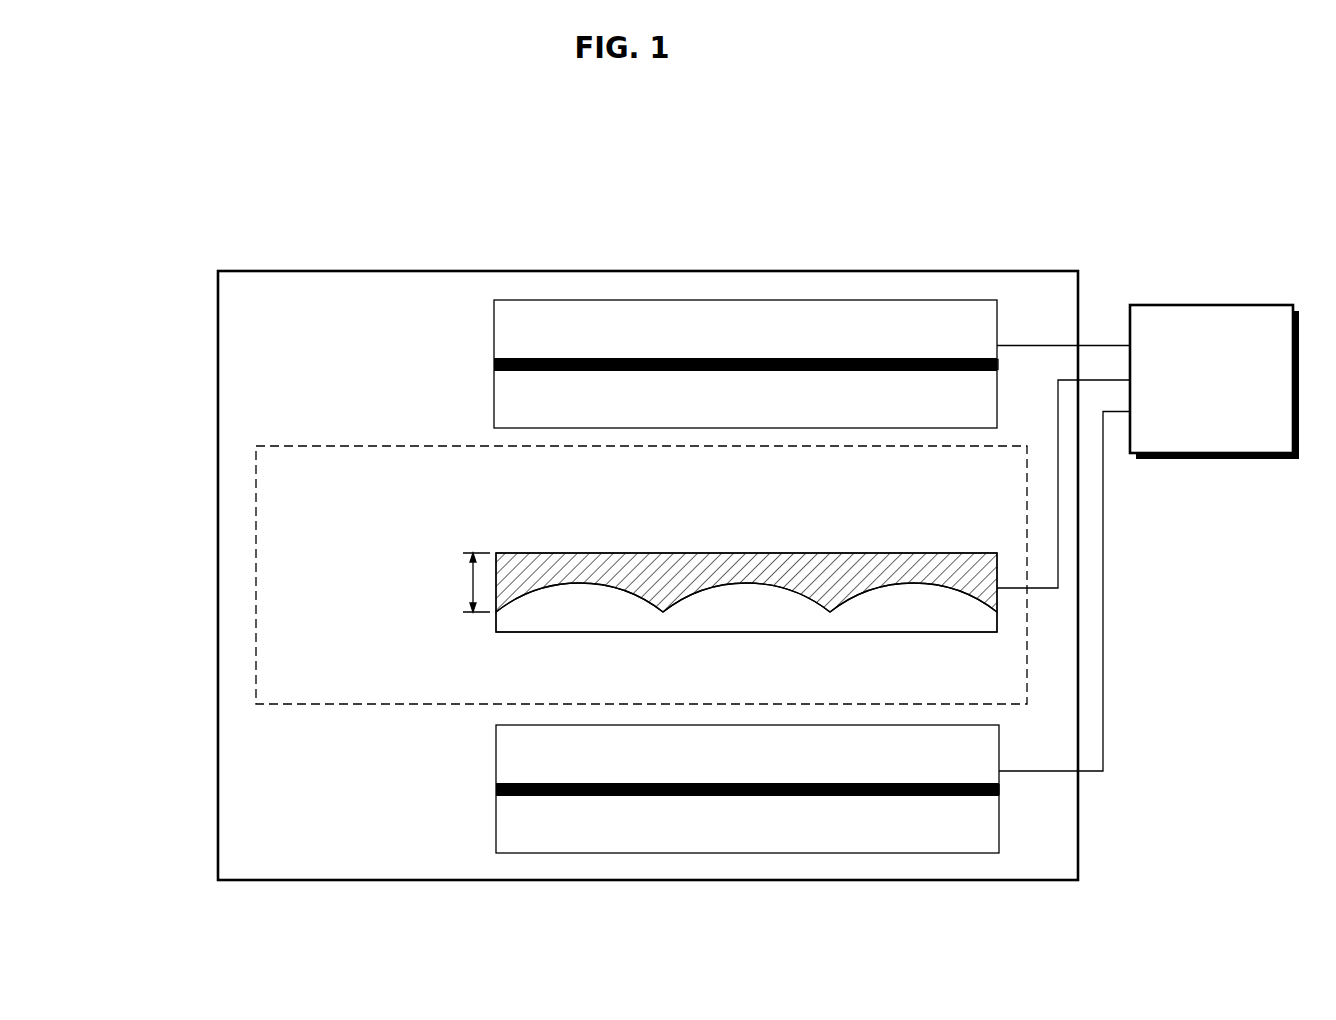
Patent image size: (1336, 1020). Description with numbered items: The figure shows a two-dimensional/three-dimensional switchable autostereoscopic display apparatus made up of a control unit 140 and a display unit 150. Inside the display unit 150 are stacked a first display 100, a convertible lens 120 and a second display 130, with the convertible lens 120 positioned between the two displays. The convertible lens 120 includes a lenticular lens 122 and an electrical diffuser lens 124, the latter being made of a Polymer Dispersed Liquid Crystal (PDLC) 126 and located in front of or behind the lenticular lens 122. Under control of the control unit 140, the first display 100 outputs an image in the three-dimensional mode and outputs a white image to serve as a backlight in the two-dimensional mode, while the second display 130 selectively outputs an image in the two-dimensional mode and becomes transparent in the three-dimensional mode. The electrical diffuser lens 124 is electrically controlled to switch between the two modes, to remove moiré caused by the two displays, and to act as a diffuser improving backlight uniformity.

The first display 100 is at (746, 633).
The convertible lens 120 is at (256, 572).
The lenticular lens 122 is at (743, 610).
The electrical diffuser lens 124 is at (704, 536).
The Polymer Dispersed Liquid Crystal (PDLC) 126 is at (625, 574).
The second display 130 is at (746, 364).
The control unit 140 is at (1208, 305).
The display unit 150 is at (617, 271).